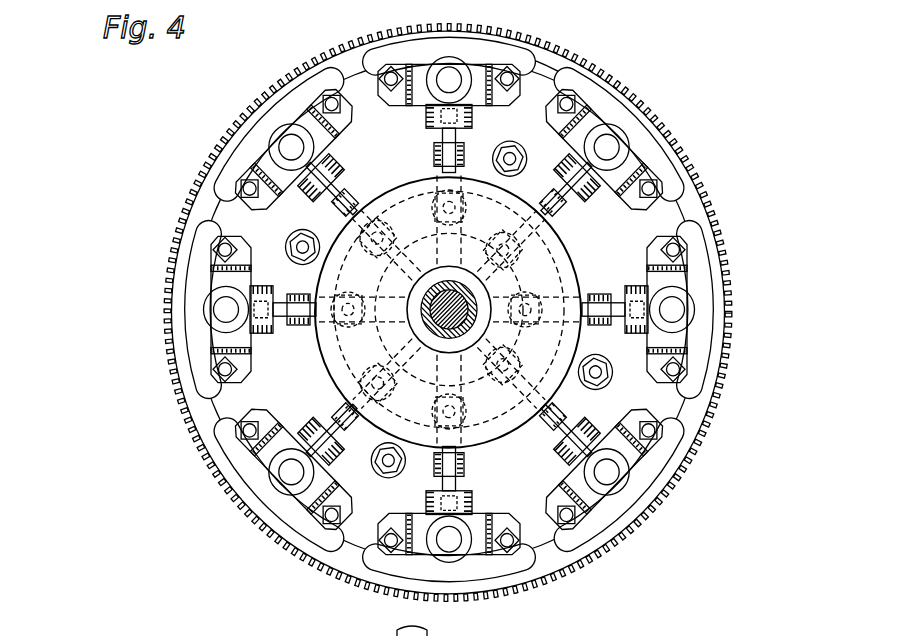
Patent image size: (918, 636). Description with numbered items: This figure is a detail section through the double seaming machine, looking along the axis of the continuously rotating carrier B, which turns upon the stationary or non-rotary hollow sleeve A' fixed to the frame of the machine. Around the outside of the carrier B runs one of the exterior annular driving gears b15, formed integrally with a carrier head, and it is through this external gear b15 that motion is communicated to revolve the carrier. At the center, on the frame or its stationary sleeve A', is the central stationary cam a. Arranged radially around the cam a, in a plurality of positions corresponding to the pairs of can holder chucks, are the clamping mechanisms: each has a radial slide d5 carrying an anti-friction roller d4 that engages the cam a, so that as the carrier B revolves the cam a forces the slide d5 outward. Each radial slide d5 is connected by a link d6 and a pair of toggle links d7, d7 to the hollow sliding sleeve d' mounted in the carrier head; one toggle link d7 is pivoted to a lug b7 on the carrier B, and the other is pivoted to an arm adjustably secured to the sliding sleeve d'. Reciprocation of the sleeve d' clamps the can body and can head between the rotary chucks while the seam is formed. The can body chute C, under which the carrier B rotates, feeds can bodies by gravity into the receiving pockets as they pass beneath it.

The exterior annular driving gear b15 is at (325, 52).
The central stationary cam a is at (568, 258).
The anti-friction roller d4 is at (376, 342).
The stationary hollow sleeve A' is at (471, 309).
The can body chute C is at (440, 334).
The continuously rotating carrier B is at (448, 296).
The link d6 is at (608, 394).
The toggle links d7 is at (431, 497).
The radial slide d5 is at (503, 451).
The hollow sliding sleeve d' is at (482, 316).
The lug b7 is at (241, 297).